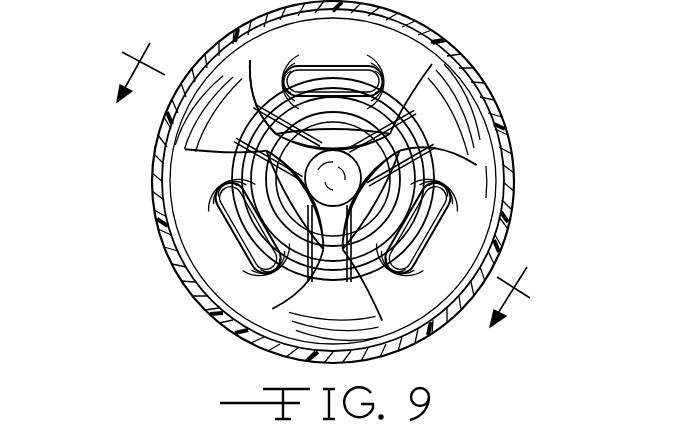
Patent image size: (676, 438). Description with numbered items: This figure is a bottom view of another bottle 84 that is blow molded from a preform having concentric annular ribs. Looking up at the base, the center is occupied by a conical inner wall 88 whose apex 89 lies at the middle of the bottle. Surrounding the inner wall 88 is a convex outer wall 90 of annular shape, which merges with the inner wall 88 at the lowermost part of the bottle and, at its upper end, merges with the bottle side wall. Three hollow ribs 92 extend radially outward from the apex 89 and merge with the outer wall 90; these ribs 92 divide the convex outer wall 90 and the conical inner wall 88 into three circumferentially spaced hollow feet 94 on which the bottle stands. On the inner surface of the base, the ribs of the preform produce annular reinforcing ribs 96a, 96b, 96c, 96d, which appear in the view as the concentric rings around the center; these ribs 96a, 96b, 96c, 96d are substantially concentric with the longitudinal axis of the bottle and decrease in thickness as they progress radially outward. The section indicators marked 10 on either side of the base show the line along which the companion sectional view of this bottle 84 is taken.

The bottle 84 is at (506, 78).
The convex outer wall 90 is at (486, 122).
The hollow ribs 92 is at (432, 64).
The hollow feet 94 is at (450, 210).
The conical inner wall 88 is at (383, 233).
The apex 89 is at (333, 181).
The annular reinforcing rib 96a is at (345, 298).
The annular reinforcing rib 96b is at (305, 252).
The annular reinforcing rib 96c is at (327, 186).
The annular reinforcing rib 96d is at (293, 165).
The section line 10 is at (311, 201).